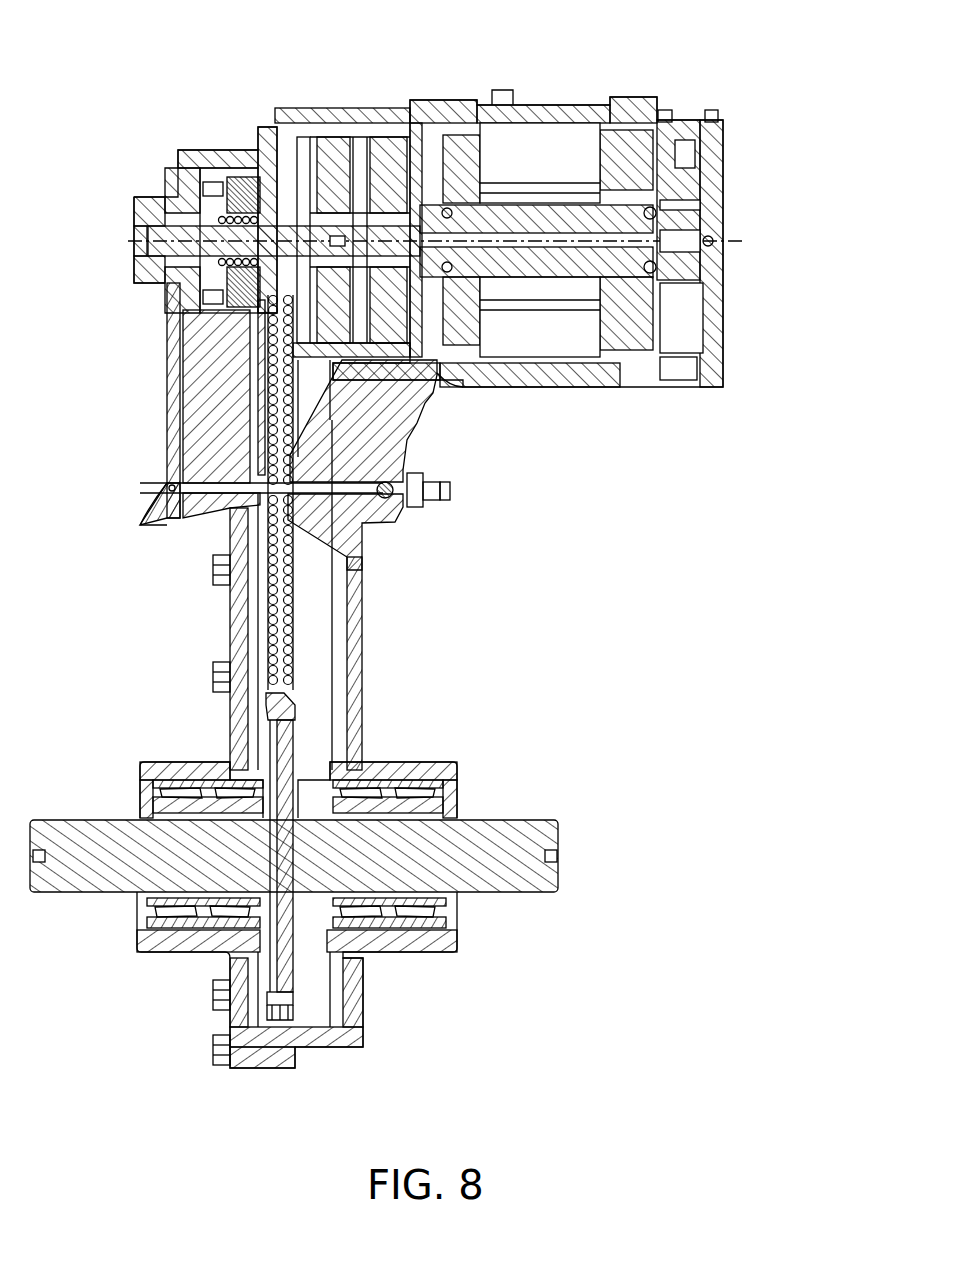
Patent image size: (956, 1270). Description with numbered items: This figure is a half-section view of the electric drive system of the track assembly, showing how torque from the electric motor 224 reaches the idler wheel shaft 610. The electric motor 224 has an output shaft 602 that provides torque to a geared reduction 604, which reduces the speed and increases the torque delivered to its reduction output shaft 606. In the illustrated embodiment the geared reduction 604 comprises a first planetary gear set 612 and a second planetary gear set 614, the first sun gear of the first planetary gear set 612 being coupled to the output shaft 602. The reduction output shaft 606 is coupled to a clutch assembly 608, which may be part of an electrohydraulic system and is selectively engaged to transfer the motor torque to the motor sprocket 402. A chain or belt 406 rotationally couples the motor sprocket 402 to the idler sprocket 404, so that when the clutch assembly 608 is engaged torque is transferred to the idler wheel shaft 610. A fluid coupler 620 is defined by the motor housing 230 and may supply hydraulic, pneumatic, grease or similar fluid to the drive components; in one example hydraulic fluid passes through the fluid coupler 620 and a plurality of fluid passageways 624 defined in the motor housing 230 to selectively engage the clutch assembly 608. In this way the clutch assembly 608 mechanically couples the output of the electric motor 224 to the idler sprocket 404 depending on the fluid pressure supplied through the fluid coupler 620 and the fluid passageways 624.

The clutch assembly 608 is at (206, 135).
The geared reduction 604 is at (357, 180).
The second planetary gear set 614 is at (326, 150).
The first planetary gear set 612 is at (388, 150).
The reduction output shaft 606 is at (150, 250).
The motor sprocket 402 is at (265, 310).
The electric motor 224 is at (741, 303).
The output shaft 602 is at (457, 392).
The fluid coupler 620 is at (452, 492).
The fluid passageways 624 is at (150, 500).
The motor housing 230 is at (230, 512).
The chain or belt 406 is at (295, 600).
The idler sprocket 404 is at (290, 706).
The idler wheel shaft 610 is at (553, 828).